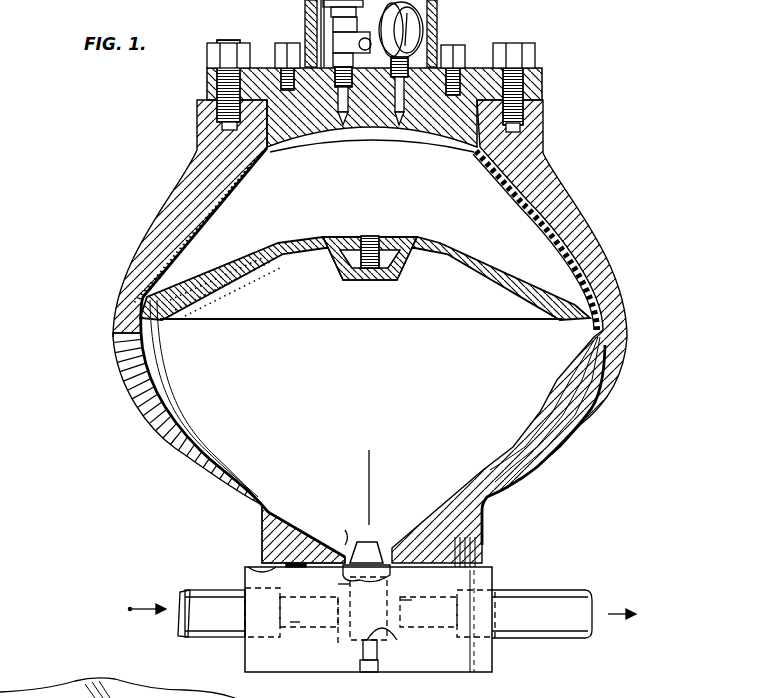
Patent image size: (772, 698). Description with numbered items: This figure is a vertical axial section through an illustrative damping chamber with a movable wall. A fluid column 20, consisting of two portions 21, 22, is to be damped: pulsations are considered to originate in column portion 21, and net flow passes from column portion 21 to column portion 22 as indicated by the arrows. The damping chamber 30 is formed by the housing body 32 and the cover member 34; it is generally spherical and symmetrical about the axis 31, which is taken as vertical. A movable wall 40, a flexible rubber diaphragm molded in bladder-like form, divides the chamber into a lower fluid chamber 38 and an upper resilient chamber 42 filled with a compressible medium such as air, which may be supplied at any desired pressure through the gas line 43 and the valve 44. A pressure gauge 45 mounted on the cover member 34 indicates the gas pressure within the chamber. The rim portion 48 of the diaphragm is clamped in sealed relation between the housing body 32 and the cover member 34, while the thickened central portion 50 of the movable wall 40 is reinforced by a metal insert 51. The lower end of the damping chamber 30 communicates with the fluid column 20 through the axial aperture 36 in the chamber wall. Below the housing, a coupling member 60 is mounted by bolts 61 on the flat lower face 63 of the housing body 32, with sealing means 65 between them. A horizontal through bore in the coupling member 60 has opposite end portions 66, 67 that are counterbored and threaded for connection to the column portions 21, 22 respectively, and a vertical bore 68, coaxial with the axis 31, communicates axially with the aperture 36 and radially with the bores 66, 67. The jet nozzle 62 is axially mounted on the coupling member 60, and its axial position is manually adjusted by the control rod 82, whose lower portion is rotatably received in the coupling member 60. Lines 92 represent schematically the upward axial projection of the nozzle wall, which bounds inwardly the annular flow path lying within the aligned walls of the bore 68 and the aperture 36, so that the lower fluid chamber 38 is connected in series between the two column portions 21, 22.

The fluid column 20 is at (535, 588).
The column portion 21 is at (190, 592).
The column portion 22 is at (560, 598).
The damping chamber 30 is at (556, 384).
The axis 31 is at (371, 480).
The housing body 32 is at (563, 430).
The cover member 34 is at (482, 68).
The axial aperture 36 is at (362, 535).
The lower fluid chamber 38 is at (440, 401).
The movable wall 40 is at (547, 307).
The upper resilient chamber 42 is at (485, 239).
The gas line 43 is at (358, 96).
The valve 44 is at (335, 16).
The pressure gauge 45 is at (416, 22).
The rim portion 48 is at (523, 105).
The central portion 50 is at (406, 270).
The metal insert 51 is at (383, 243).
The coupling member 60 is at (470, 663).
The bolts 61 is at (297, 560).
The jet nozzle 62 is at (378, 538).
The flat lower face 63 is at (268, 571).
The sealing means 65 is at (462, 549).
The end portion of bore 66 is at (297, 623).
The end portion of bore 67 is at (412, 602).
The vertical bore 68 is at (344, 590).
The control rod 82 is at (395, 640).
The upward axial projection of the nozzle wall 92 is at (318, 692).